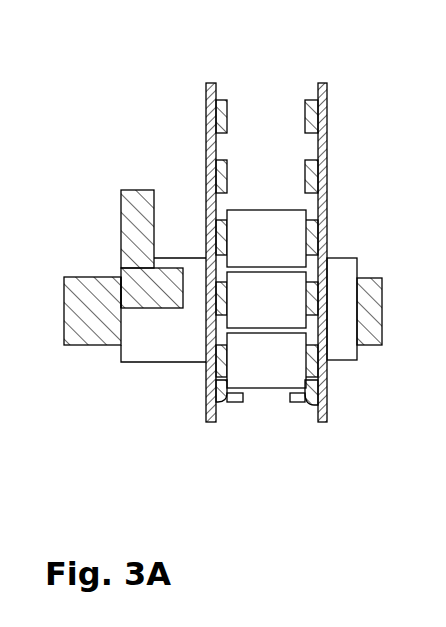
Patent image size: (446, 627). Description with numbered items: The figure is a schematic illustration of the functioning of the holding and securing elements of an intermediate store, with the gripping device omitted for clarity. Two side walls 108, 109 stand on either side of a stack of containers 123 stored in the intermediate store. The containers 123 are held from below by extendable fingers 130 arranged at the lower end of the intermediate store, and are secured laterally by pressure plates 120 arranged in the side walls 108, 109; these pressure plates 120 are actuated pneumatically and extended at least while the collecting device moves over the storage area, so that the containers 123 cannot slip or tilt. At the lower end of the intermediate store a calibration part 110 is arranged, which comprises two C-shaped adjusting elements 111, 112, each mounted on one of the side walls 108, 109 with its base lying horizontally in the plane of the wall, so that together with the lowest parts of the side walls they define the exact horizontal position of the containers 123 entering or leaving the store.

The calibration part 110 is at (194, 403).
The side wall 109 is at (206, 138).
The side wall 108 is at (327, 144).
The pressure plate 120 is at (216, 105).
The container 123 is at (260, 378).
The C-shaped adjusting element 112 is at (222, 398).
The extendable finger 130 is at (240, 402).
The C-shaped adjusting element 111 is at (310, 400).